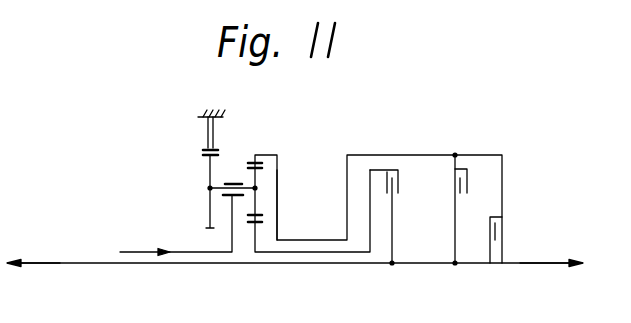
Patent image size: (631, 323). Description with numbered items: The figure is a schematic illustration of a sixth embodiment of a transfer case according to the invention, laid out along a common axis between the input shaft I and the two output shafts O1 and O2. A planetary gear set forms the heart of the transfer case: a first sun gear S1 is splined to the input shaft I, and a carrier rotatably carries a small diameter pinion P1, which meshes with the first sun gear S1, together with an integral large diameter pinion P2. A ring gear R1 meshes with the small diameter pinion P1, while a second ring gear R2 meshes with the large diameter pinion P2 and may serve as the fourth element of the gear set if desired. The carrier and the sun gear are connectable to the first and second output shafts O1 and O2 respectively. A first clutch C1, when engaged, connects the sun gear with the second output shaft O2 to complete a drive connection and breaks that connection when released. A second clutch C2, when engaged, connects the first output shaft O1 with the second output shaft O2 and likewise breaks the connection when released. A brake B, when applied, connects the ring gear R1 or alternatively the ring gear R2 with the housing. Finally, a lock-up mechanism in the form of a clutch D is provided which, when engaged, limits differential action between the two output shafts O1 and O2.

The brake B is at (203, 138).
The ring gear R2 is at (218, 152).
The large diameter pinion P2 is at (210, 170).
The ring gear R1 is at (268, 155).
The small diameter pinion P1 is at (272, 175).
The first sun gear S1 is at (255, 232).
The first clutch C1 is at (404, 183).
The second clutch C2 is at (472, 183).
The lock-up clutch D is at (507, 227).
The input shaft I is at (137, 252).
The first output shaft O1 is at (545, 263).
The second output shaft O2 is at (44, 263).